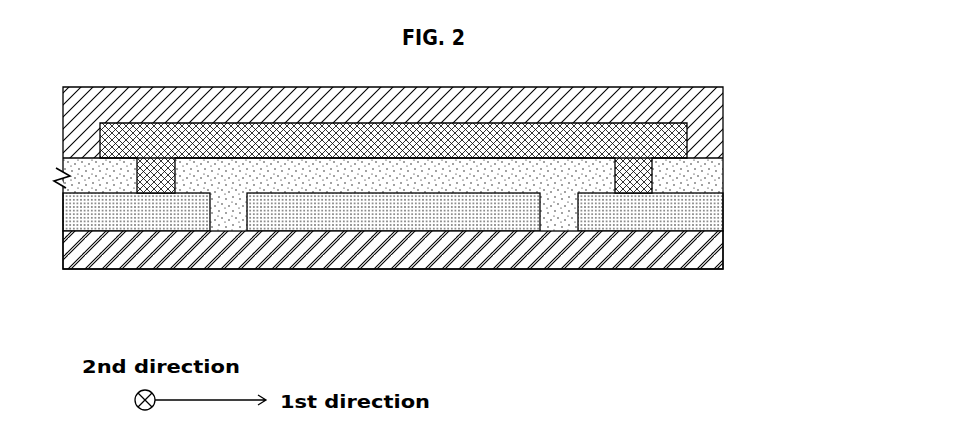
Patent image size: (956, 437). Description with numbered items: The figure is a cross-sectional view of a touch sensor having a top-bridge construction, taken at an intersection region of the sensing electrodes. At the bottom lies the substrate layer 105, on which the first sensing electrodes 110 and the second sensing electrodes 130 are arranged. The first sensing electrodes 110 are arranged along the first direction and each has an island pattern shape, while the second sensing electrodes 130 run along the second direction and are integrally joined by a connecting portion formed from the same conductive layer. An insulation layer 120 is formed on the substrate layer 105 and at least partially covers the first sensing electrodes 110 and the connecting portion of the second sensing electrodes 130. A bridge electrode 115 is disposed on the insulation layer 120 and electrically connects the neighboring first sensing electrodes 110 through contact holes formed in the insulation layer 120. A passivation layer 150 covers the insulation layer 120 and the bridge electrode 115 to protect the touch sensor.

The substrate layer 105 is at (723, 250).
The first sensing electrode 110 is at (723, 206).
The bridge electrode 115 is at (687, 131).
The insulation layer 120 is at (723, 176).
The second sensing electrode 130 is at (397, 212).
The passivation layer 150 is at (723, 93).